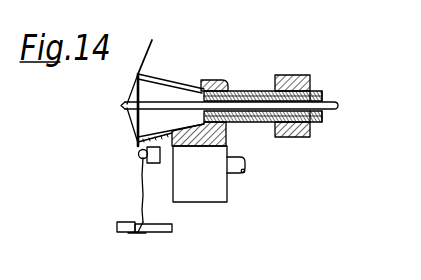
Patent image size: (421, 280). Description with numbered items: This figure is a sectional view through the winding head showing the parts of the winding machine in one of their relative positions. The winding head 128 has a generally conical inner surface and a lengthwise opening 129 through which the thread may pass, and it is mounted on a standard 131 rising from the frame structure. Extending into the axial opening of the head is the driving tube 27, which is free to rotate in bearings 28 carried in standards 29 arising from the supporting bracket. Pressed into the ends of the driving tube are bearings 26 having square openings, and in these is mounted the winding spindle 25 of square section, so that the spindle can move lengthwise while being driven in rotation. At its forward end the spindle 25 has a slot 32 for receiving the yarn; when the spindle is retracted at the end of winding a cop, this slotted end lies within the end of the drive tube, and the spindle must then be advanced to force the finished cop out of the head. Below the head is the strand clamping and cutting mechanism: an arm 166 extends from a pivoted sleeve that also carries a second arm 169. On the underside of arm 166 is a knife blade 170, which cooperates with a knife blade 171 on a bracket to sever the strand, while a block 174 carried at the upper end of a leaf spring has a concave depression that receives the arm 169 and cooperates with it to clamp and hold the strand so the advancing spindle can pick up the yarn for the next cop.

The standard 131 is at (154, 41).
The lengthwise opening 129 is at (165, 81).
The winding head 128 is at (212, 80).
The bearings 28 is at (245, 92).
The bearings 26 is at (241, 122).
The standards 29 is at (290, 74).
The driving tube 27 is at (317, 91).
The winding spindle 25 is at (336, 101).
The slot 32 is at (121, 106).
The second arm 169 is at (138, 154).
The block 174 is at (157, 163).
The arm 166 is at (120, 222).
The knife blade 170 is at (126, 236).
The knife blade 171 is at (164, 233).